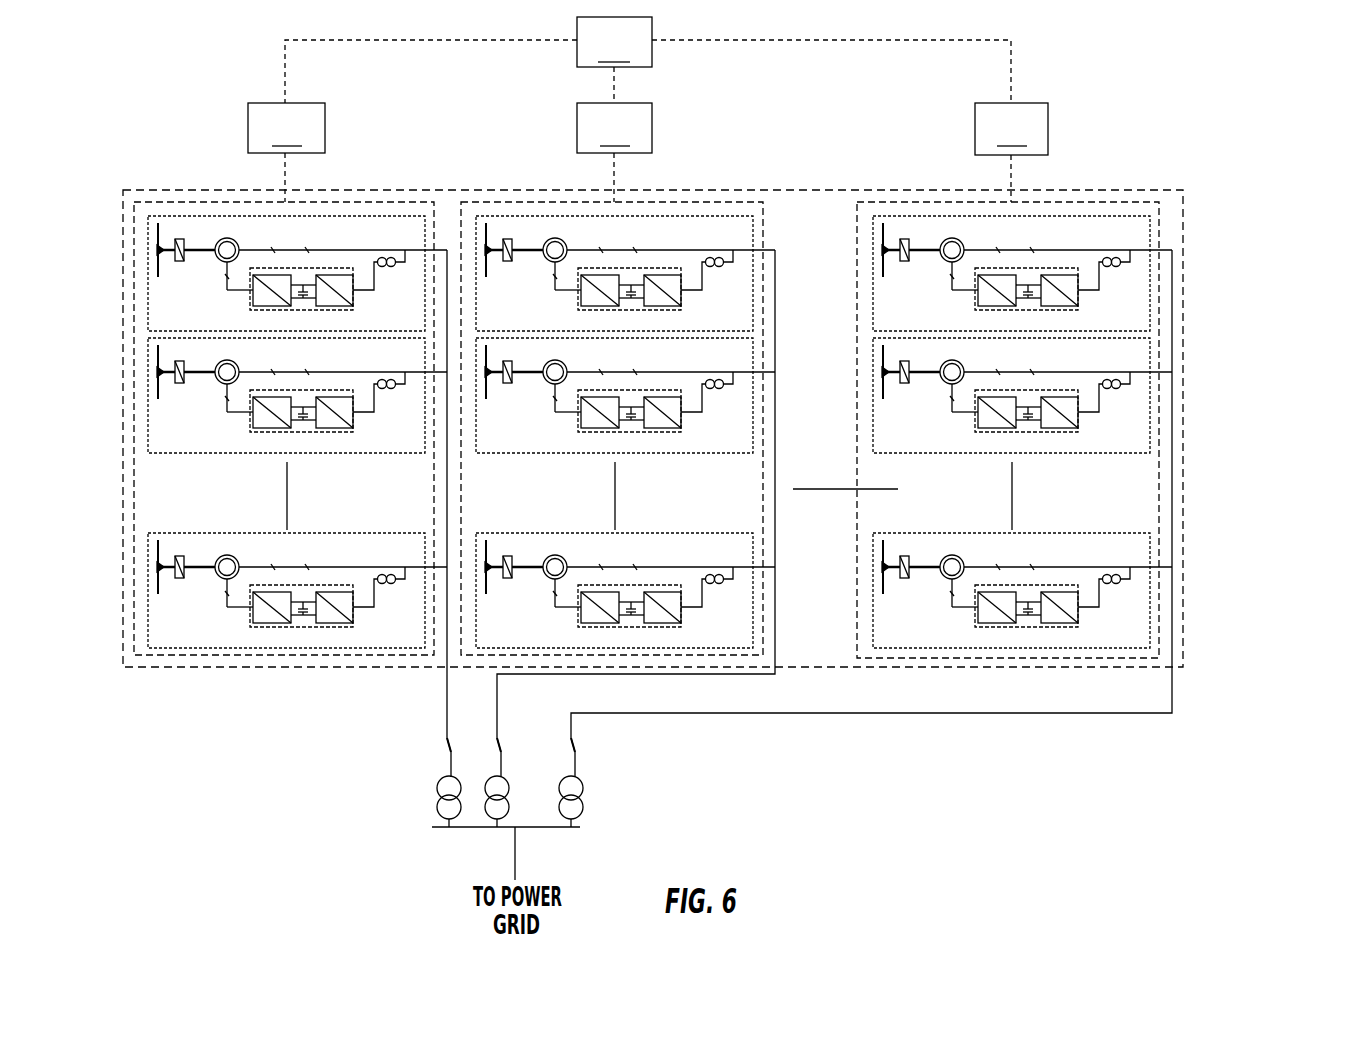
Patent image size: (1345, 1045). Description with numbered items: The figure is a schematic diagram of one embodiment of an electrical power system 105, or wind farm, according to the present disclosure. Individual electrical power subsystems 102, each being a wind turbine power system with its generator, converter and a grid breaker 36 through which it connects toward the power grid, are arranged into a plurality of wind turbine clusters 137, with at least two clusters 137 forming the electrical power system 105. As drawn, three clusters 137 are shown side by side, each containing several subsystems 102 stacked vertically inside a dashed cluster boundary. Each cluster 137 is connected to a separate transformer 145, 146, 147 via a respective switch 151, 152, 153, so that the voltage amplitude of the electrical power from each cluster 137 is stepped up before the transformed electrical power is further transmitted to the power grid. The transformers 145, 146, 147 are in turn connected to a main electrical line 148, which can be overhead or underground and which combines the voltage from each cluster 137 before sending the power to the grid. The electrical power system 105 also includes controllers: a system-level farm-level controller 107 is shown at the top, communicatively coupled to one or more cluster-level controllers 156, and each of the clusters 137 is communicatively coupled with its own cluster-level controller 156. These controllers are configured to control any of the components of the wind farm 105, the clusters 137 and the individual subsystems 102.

The grid breaker 36 is at (421, 226).
The electrical power subsystem 102 is at (148, 290).
The electrical power system 105 is at (1262, 283).
The farm-level controller 107 is at (648, 60).
The wind turbine cluster 137 is at (123, 350).
The transformer 145 is at (437, 786).
The transformer 146 is at (505, 786).
The transformer 147 is at (581, 786).
The main electrical line 148 is at (470, 830).
The switch 151 is at (432, 738).
The switch 152 is at (486, 738).
The cluster breaker 153 is at (560, 744).
The cluster-level controller 156 is at (648, 152).